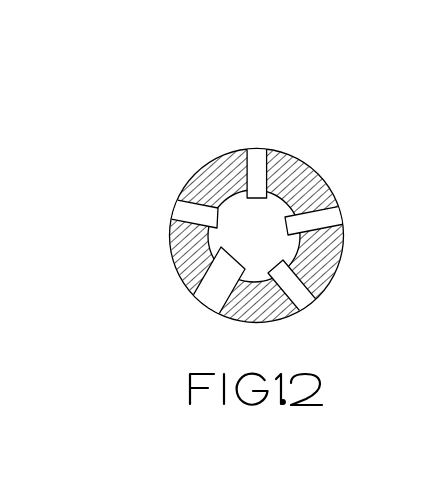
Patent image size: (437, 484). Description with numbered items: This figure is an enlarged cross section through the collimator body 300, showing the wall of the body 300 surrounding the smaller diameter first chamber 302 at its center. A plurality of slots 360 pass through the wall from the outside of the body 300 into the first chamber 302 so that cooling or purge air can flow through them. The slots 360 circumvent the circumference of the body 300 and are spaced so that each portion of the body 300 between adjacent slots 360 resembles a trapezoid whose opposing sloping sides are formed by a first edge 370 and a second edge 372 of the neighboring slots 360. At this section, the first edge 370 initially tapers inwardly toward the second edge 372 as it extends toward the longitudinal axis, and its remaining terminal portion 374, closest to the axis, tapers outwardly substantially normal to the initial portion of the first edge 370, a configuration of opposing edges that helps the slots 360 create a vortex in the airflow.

The collimator body 300 is at (206, 179).
The first chamber 302 is at (257, 236).
The slot 360 is at (178, 230).
The first edge 370 is at (305, 200).
The second edge 372 is at (258, 152).
The terminal portion 374 is at (305, 203).